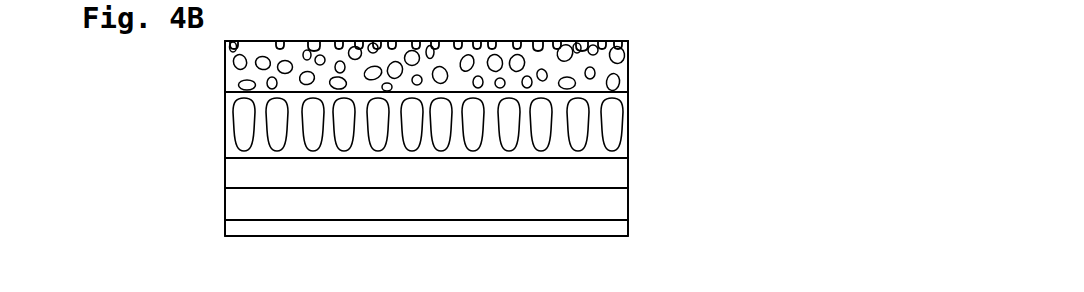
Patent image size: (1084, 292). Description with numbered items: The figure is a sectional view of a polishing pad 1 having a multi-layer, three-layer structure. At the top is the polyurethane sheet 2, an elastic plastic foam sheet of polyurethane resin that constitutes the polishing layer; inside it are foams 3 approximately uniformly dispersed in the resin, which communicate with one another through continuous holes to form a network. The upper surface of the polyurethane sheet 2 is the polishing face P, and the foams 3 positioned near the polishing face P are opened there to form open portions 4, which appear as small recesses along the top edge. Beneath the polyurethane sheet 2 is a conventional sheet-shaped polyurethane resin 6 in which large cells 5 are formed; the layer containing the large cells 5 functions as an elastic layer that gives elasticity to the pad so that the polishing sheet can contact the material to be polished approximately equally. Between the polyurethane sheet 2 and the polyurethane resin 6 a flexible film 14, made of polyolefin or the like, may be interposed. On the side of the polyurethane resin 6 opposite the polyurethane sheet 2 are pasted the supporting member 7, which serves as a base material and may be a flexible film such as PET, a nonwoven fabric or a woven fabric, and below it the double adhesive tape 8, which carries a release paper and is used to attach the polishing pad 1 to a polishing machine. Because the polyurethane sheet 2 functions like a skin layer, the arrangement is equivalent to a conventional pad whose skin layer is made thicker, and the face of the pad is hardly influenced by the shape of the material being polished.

The polishing pad 1 is at (722, 41).
The polyurethane sheet 2 is at (478, 46).
The foams 3 is at (347, 43).
The open portions 4 is at (589, 43).
The polishing face P is at (473, 37).
The flexible film 14 is at (625, 92).
The large cells 5 is at (613, 111).
The polyurethane resin 6 is at (620, 153).
The supporting member 7 is at (622, 181).
The double adhesive tape 8 is at (620, 208).